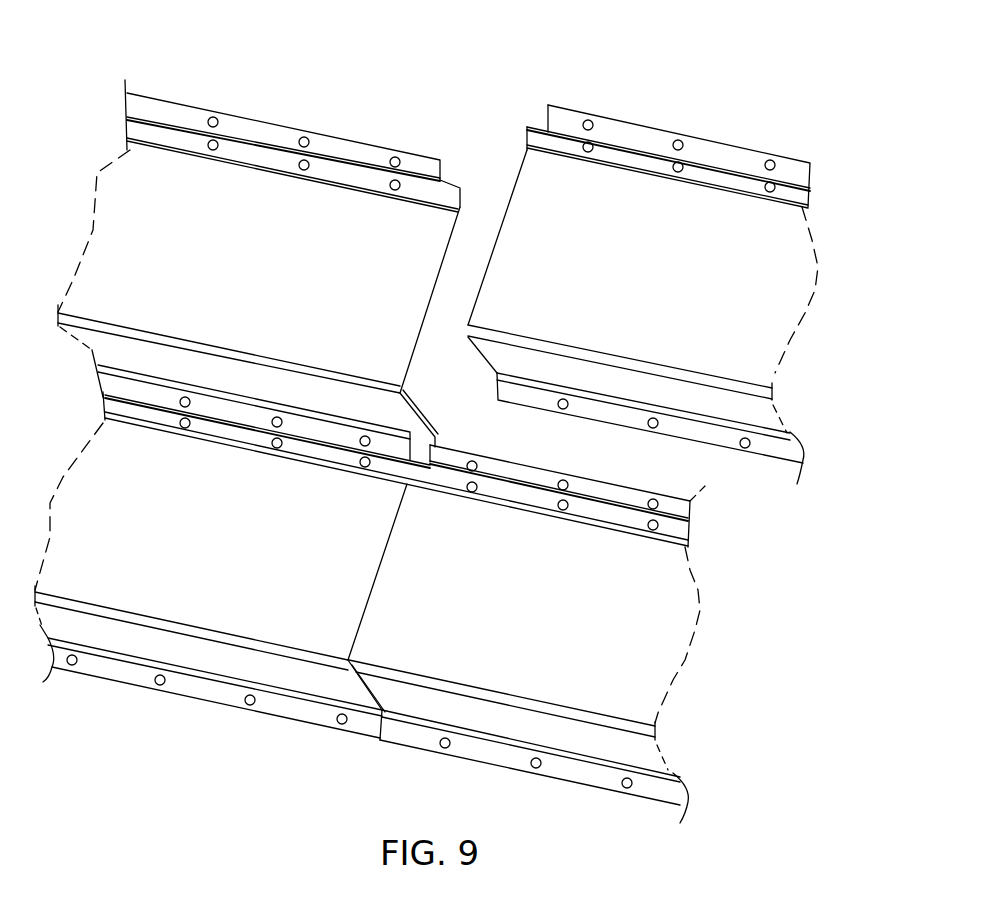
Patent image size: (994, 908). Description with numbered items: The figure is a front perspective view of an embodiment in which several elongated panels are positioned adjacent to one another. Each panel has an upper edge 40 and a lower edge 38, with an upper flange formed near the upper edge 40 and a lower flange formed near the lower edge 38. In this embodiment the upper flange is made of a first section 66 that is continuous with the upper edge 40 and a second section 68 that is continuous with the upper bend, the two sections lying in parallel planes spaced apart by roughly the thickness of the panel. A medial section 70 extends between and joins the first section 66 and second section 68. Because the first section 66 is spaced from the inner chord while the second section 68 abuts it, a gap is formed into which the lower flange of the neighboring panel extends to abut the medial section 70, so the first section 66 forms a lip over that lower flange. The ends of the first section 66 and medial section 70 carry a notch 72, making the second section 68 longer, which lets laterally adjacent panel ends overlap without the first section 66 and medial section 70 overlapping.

The lower edge 38 is at (745, 451).
The upper edge 40 is at (692, 138).
The first section 66 is at (328, 145).
The second section 68 is at (413, 188).
The medial section 70 is at (172, 123).
The notch 72 is at (443, 178).